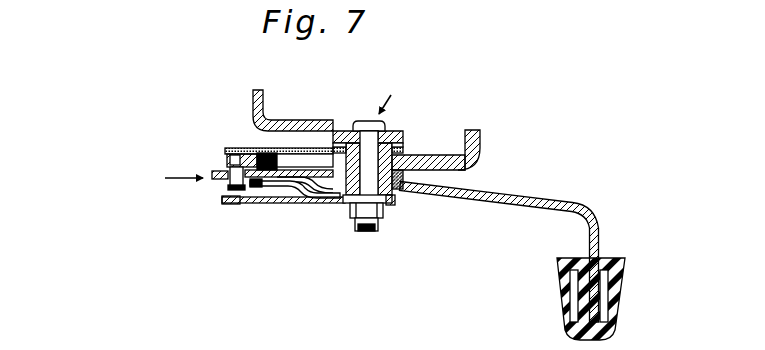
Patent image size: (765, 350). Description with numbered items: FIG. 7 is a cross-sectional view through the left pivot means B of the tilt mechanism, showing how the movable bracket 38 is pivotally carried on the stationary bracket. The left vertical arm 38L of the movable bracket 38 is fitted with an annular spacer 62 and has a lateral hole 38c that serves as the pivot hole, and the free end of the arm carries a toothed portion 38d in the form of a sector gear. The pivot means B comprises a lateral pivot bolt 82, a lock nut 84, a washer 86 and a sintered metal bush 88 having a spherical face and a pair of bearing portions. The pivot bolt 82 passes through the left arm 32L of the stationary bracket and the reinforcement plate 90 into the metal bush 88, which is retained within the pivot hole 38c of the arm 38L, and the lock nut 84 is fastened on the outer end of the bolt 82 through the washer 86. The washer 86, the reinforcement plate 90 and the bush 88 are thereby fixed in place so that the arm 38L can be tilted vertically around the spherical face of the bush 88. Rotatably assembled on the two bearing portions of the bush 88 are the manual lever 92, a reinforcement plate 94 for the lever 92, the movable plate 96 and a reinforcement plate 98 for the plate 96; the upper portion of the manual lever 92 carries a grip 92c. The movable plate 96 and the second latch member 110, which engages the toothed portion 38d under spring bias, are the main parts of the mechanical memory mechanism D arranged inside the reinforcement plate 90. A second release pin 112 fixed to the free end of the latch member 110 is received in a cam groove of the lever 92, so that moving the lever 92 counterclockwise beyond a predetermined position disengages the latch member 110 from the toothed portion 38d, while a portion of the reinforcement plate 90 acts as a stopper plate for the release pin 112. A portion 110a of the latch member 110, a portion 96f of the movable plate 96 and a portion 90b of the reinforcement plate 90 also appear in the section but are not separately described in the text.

The left arm of stationary bracket 32L is at (255, 94).
The reinforcement plate for manual lever 94 is at (321, 124).
The lateral hole 38c is at (365, 127).
The left pivot means B is at (391, 99).
The left vertical arm of movable bracket 38L is at (433, 156).
The movable bracket 38 is at (475, 141).
The annular spacer 62 is at (412, 180).
The manual lever 92 is at (535, 204).
The grip 92c is at (607, 306).
The cover plate 110a is at (262, 153).
The second latch member 110 is at (228, 158).
The reinforcement plate for movable plate 98 is at (266, 153).
The toothed portion 38d is at (278, 153).
The second release pin 112 is at (228, 184).
The mechanical memory mechanism D is at (174, 177).
The flange of lever 96 96f is at (217, 175).
The movable plate 96 is at (258, 186).
The reinforcement plate 90 is at (308, 203).
The end of base plate 90b is at (227, 199).
The washer 86 is at (345, 203).
The sintered metal bush 88 is at (392, 206).
The lock nut 84 is at (387, 223).
The lateral pivot bolt 82 is at (366, 235).